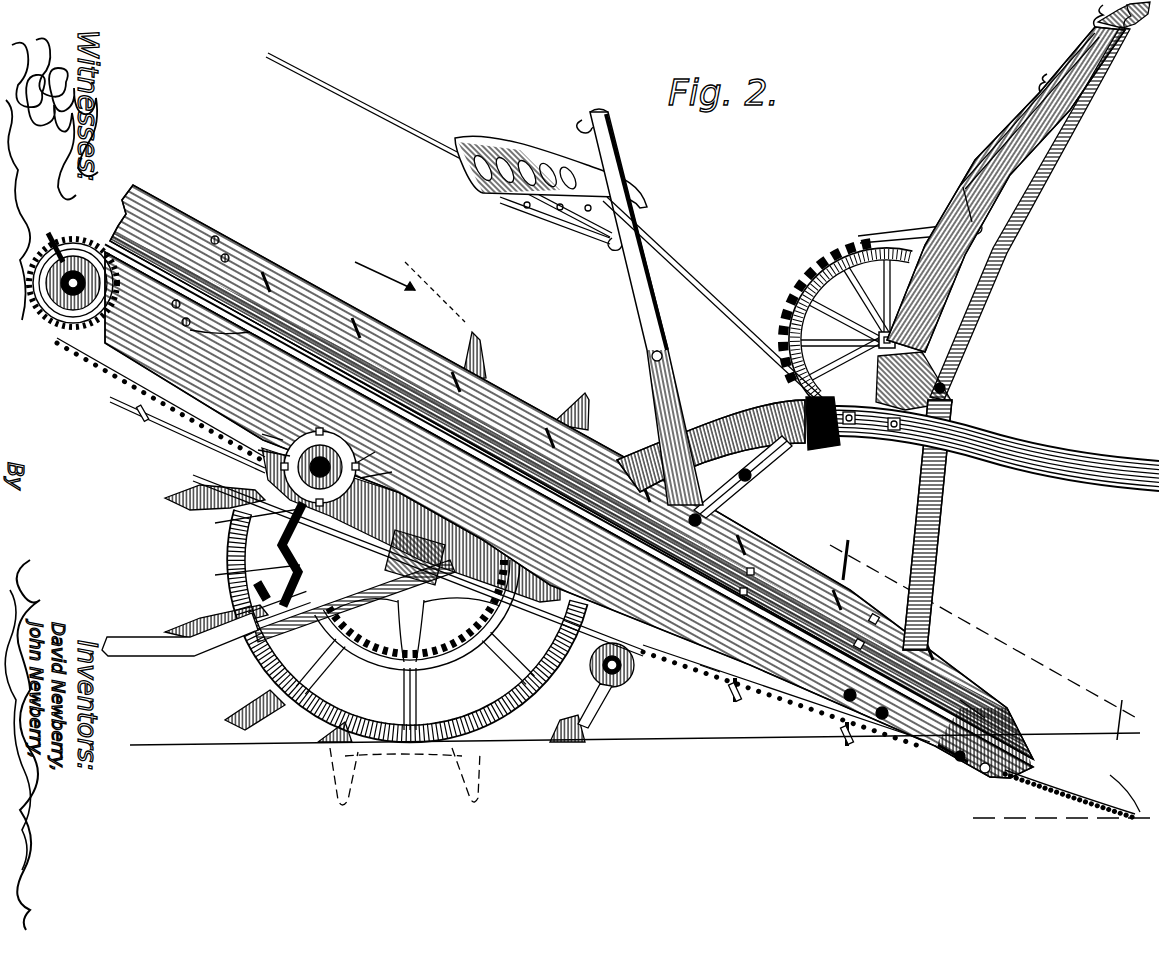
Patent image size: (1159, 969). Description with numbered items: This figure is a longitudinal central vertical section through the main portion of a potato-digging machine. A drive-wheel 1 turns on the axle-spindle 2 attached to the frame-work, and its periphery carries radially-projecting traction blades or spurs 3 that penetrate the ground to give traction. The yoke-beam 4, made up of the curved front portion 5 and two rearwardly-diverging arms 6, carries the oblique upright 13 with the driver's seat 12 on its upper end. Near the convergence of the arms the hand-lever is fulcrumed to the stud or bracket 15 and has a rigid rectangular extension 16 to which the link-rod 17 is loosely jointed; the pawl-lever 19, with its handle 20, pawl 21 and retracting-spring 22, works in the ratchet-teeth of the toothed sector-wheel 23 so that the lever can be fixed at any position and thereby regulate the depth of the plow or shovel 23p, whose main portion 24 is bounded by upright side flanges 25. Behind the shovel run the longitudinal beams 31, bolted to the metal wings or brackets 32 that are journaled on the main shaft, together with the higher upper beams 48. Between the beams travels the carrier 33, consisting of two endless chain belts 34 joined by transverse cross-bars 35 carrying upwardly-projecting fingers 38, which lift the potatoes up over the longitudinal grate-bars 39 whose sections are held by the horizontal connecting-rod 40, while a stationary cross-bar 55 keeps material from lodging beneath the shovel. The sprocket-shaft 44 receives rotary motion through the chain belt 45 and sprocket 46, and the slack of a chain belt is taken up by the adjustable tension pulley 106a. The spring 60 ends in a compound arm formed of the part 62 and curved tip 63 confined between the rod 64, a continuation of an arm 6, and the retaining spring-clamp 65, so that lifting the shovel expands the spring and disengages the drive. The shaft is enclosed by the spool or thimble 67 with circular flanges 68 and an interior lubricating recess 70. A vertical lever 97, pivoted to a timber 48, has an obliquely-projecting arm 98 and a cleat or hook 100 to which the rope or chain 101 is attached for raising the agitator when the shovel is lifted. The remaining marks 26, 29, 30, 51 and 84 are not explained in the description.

The drive-wheel 1 is at (495, 718).
The axle-spindle 2 is at (455, 568).
The traction blades or spurs 3 is at (480, 350).
The yoke-beam 4 is at (755, 412).
The curved front portion 5 is at (878, 432).
The rearwardly-diverging arms or prongs 6 is at (471, 539).
The driver's seat 12 is at (804, 438).
The oblique upright 13 is at (705, 296).
The stud or bracket 15 is at (912, 381).
The rigid rectangular extension 16 is at (920, 358).
The link-rod 17 is at (938, 520).
The pawl-lever 19 is at (1010, 160).
The handle 20 is at (1112, 21).
The pawl 21 is at (917, 231).
The retracting-spring 22 is at (1048, 80).
The toothed sector-wheel 23 is at (808, 300).
The plow or shovel 23p is at (1110, 786).
The main portion 24 is at (1070, 790).
The upright side flanges 25 is at (1020, 742).
The board cleat 26 is at (956, 696).
The divider stakes 29 is at (597, 473).
The finger bar end 30 is at (989, 775).
The beam or timber 31 is at (569, 515).
The metal wings or brackets 32 is at (258, 433).
The carrier 33 is at (519, 576).
The endless chain belts 34 is at (98, 368).
The transverse cross-bars 35 is at (755, 690).
The upwardly-projecting fingers 38 is at (733, 700).
The longitudinal grate-bars 39 is at (406, 451).
The horizontal connecting-rod 40 is at (962, 760).
The sprocket-shaft 44 is at (45, 305).
The chain belt 45 is at (175, 418).
The sprocket 46 is at (260, 448).
The beam or timber 48 is at (180, 225).
The divider strip 51 is at (569, 505).
The stationary cross-bar 55 is at (949, 757).
The spring 60 is at (248, 520).
The part of compound arm 62 is at (285, 545).
The curved tip 63 is at (245, 572).
The rod 64 is at (205, 645).
The retaining spring-clamp 65 is at (259, 583).
The spool or thimble 67 is at (388, 470).
The circular flange 68 is at (375, 451).
The interior circular recess 70 is at (310, 440).
The finger bar cleat 84 is at (710, 672).
The vertical lever 97 is at (662, 340).
The obliquely-projecting arm 98 is at (730, 500).
The cleat or hook 100 is at (580, 124).
The rope or chain 101 is at (439, 145).
The tension pulley 106a is at (622, 684).